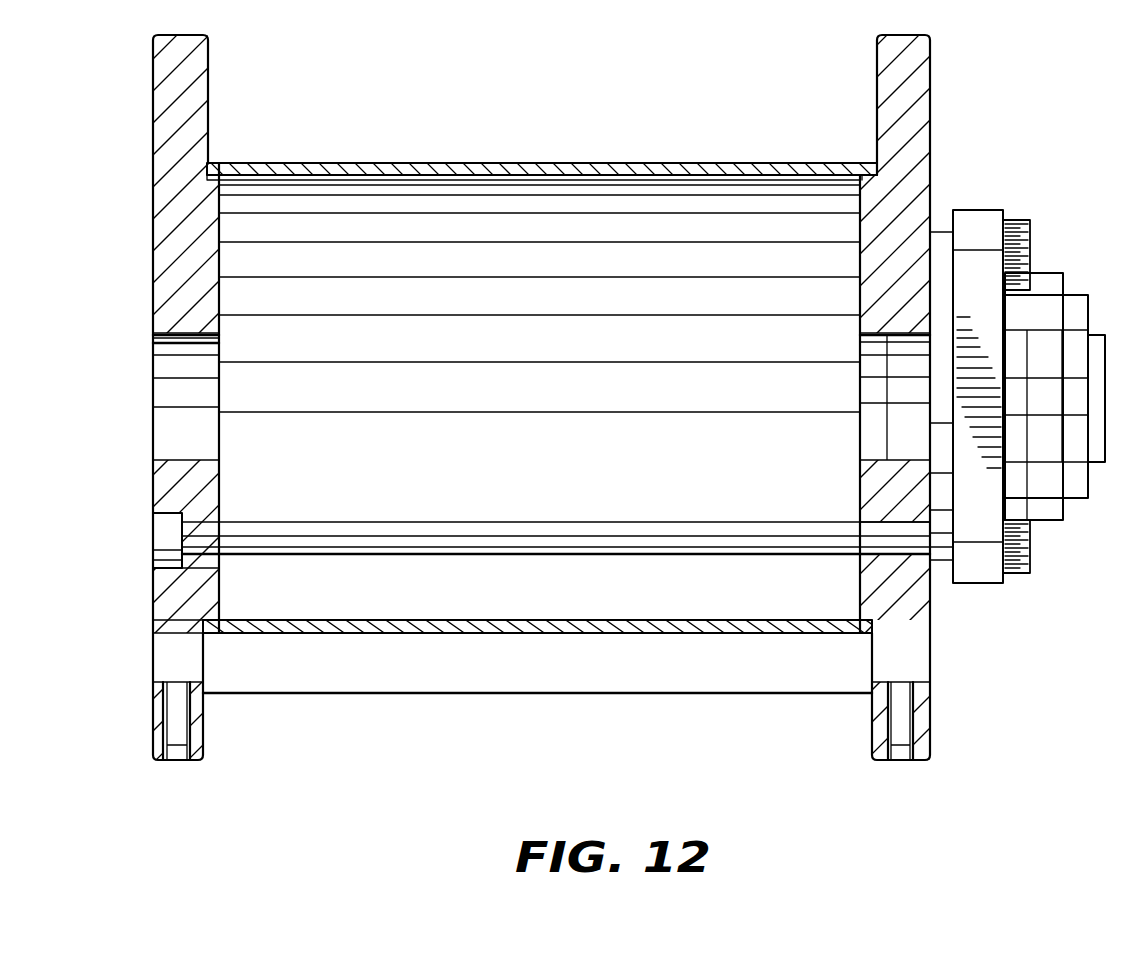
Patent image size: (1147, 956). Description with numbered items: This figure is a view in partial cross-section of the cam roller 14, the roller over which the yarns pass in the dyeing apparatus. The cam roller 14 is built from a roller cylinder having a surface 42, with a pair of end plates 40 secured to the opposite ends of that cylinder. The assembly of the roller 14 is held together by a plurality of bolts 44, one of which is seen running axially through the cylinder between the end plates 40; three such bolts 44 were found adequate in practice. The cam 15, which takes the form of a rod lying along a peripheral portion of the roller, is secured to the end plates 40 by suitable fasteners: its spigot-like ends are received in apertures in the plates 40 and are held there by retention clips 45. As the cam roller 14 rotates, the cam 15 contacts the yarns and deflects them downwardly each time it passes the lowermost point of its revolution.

The cam roller 14 is at (1020, 159).
The cam 15 is at (712, 680).
The end plates 40 is at (208, 102).
The surface 42 is at (522, 162).
The bolts 44 is at (645, 532).
The retention clips 45 is at (177, 762).